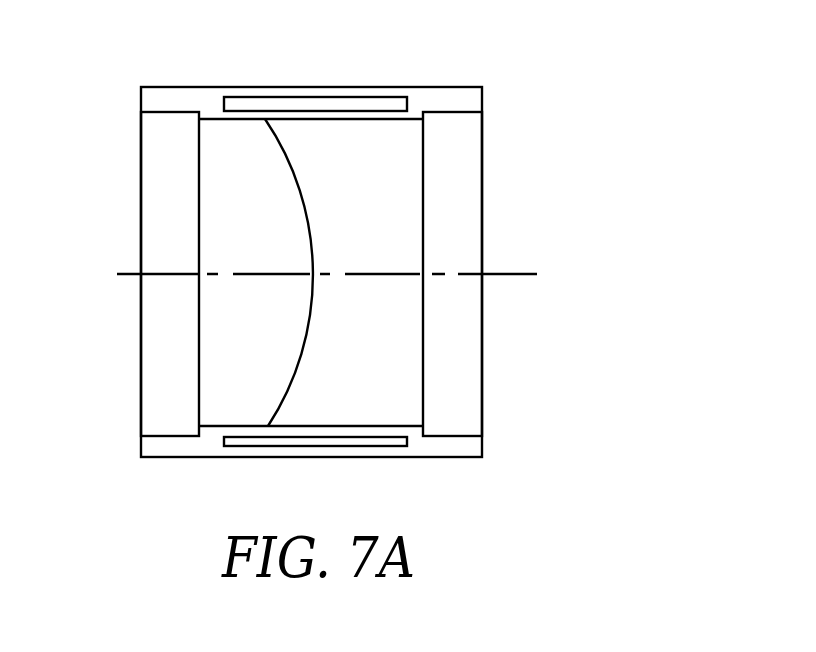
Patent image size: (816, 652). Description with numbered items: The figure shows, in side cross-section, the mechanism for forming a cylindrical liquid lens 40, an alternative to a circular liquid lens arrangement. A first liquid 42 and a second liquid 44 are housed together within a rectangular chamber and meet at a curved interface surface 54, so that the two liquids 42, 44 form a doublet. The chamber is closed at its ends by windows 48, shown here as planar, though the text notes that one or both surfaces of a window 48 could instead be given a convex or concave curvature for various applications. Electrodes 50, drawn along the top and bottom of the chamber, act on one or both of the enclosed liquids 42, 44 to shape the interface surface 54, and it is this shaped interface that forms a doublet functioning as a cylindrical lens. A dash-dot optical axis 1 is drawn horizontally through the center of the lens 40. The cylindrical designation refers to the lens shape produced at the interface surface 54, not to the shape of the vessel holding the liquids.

The optical axis 1 is at (525, 275).
The cylindrical liquid lens 40 is at (542, 85).
The first liquid 42 is at (231, 157).
The second liquid 44 is at (398, 360).
The windows 48 is at (141, 183).
The electrodes 50 is at (355, 98).
The interface surface 54 is at (312, 225).